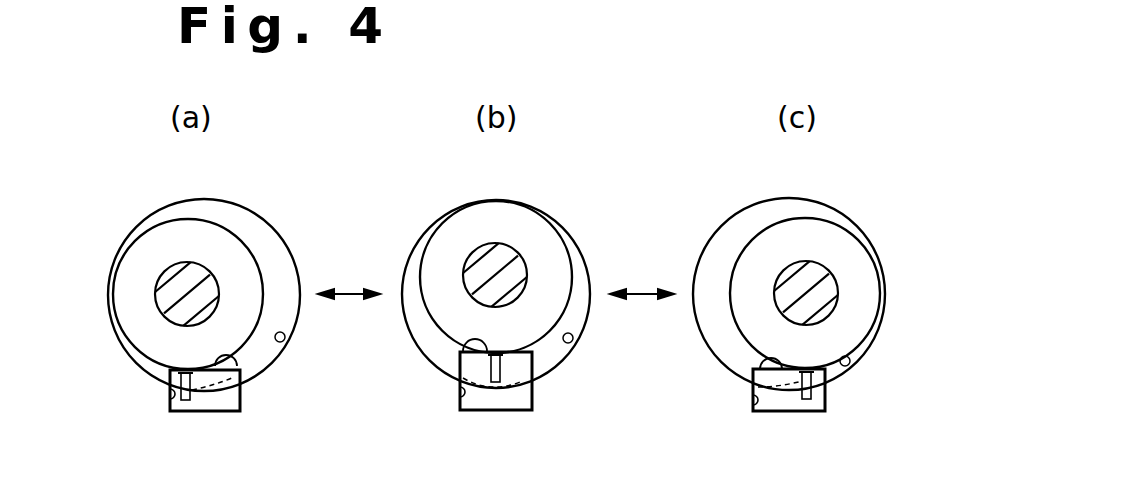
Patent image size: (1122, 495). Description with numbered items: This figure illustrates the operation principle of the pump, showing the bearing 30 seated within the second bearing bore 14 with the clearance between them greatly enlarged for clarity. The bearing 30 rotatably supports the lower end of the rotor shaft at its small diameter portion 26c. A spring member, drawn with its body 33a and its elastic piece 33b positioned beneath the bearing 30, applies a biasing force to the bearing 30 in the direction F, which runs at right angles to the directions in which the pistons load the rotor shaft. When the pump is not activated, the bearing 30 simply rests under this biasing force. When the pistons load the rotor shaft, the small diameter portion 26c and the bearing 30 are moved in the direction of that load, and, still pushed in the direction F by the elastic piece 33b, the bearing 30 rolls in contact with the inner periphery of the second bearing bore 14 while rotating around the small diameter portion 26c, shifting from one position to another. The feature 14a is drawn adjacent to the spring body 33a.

The second bearing bore 14 is at (285, 337).
The pin of rotary member 14a is at (176, 398).
The bearing 30 is at (143, 241).
The small diameter portion 26c is at (203, 270).
The slider block 33a is at (205, 403).
The elastic piece 33b is at (234, 360).
The direction F is at (208, 391).